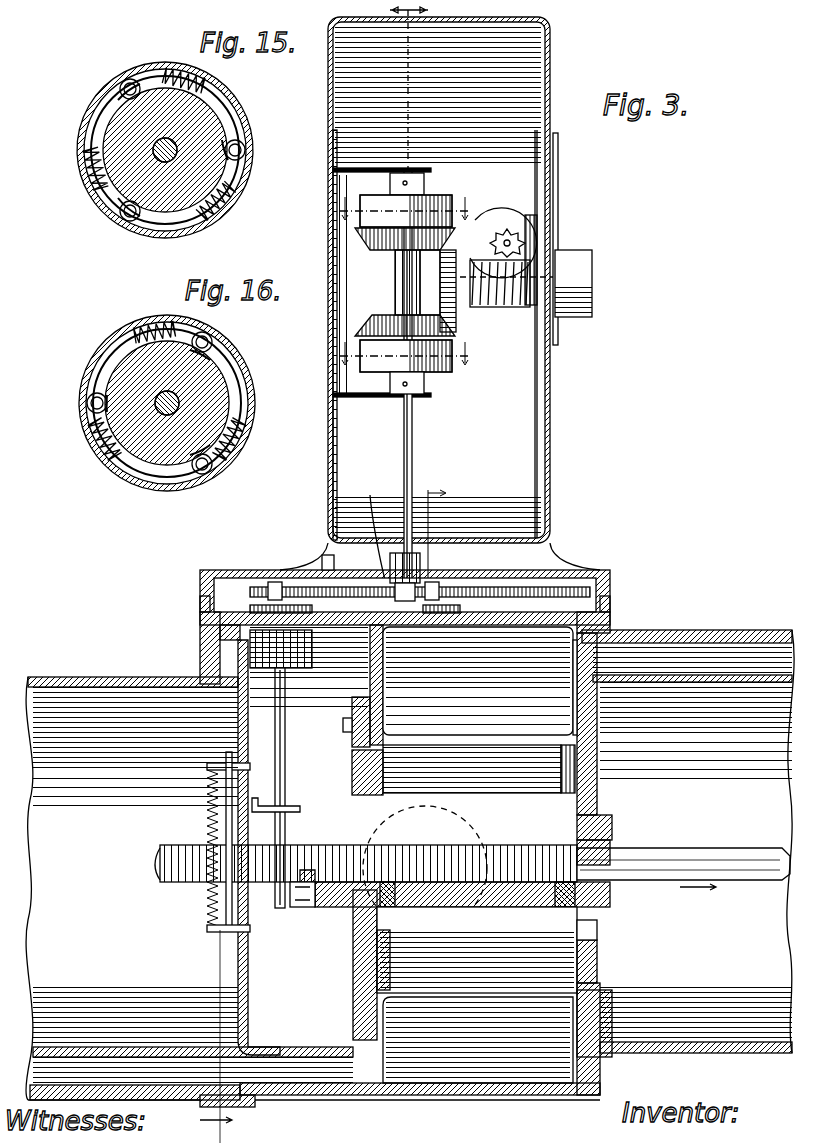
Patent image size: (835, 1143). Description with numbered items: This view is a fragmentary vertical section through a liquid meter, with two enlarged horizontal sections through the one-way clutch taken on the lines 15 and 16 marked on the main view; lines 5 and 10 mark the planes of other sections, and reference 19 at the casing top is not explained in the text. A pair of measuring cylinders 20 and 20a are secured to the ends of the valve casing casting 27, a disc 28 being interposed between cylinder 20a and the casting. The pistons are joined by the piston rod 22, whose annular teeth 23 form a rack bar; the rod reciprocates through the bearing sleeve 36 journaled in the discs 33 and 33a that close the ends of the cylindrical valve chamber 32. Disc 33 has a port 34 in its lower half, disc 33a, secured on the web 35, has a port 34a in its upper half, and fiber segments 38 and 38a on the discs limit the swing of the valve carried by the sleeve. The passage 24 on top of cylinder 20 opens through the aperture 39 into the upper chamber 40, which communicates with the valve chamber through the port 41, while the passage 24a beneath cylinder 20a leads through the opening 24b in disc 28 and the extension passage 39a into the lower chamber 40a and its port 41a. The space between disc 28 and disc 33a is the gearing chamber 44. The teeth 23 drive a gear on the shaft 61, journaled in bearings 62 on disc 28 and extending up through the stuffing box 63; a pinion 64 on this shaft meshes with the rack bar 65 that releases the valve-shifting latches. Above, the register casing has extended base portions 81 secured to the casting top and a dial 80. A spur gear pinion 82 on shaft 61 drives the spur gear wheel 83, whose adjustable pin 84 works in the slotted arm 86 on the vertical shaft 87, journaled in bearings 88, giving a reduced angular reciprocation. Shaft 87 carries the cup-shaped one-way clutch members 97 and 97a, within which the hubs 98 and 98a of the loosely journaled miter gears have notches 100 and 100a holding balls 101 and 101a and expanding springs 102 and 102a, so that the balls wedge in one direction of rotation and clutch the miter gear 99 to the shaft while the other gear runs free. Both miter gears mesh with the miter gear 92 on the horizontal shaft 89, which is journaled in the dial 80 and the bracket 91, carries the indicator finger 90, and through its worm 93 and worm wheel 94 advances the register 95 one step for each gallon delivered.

In FIG. 3, the section line 5 is at (409, 85).
In FIG. 3, the section arrow 10 is at (432, 523).
In FIG. 3, the section line 15 is at (503, 237).
In FIG. 3, the section line 16 is at (403, 361).
In FIG. 3, the housing top 19 is at (488, 20).
In FIG. 3, the measuring cylinder 20 is at (728, 630).
In FIG. 3, the measuring cylinder 20a is at (112, 665).
In FIG. 3, the piston rod 22 is at (684, 845).
In FIG. 3, the annular teeth 23 is at (168, 850).
In FIG. 3, the passage 24 is at (628, 645).
In FIG. 3, the passage 24a is at (35, 1045).
In FIG. 3, the opening 24b is at (245, 1095).
In FIG. 3, the valve casing casting 27 is at (478, 1097).
In FIG. 3, the disc 28 is at (238, 670).
In FIG. 3, the cylindrical valve chamber 32 is at (465, 965).
In FIG. 3, the disc 33 is at (598, 912).
In FIG. 3, the disc 33a is at (343, 725).
In FIG. 3, the port 34 is at (598, 965).
In FIG. 3, the port 34a is at (352, 775).
In FIG. 3, the web 35 is at (372, 680).
In FIG. 3, the bearing sleeve 36 is at (605, 838).
In FIG. 3, the fiber segment 38 is at (562, 788).
In FIG. 3, the fiber segment 38a is at (378, 968).
In FIG. 3, the aperture 39 is at (575, 665).
In FIG. 3, the extension passage 39a is at (340, 1090).
In FIG. 3, the upper chamber 40 is at (478, 681).
In FIG. 3, the lower chamber 40a is at (500, 1045).
In FIG. 3, the port 41 is at (462, 735).
In FIG. 3, the port 41a is at (610, 951).
In FIG. 3, the gearing chamber 44 is at (352, 735).
In FIG. 3, the shaft 61 is at (284, 722).
In FIG. 3, the bearings 62 is at (300, 806).
In FIG. 3, the stuffing box 63 is at (265, 645).
In FIG. 3, the gear pinion 64 is at (305, 905).
In FIG. 3, the rack bar 65 is at (240, 925).
In FIG. 3, the dial 80 is at (548, 398).
In FIG. 3, the extended base portions 81 is at (300, 568).
In FIG. 3, the spur gear pinion 82 is at (255, 592).
In FIG. 3, the spur gear wheel 83 is at (525, 576).
In FIG. 3, the pin 84 is at (326, 560).
In FIG. 3, the arm 86 is at (370, 524).
In FIG. 15, the vertical shaft 87 is at (168, 158).
In FIG. 16, the vertical shaft 87 is at (162, 392).
In FIG. 3, the vertical shaft 87 is at (413, 440).
In FIG. 3, the bearings 88 is at (340, 170).
In FIG. 3, the horizontal shaft 89 is at (594, 268).
In FIG. 3, the indicator finger 90 is at (560, 235).
In FIG. 3, the bracket 91 is at (401, 282).
In FIG. 3, the miter gear 92 is at (457, 318).
In FIG. 3, the worm 93 is at (510, 308).
In FIG. 3, the worm wheel 94 is at (508, 230).
In FIG. 3, the register 95 is at (530, 215).
In FIG. 15, the cup-shaped one-way clutch member 97 is at (245, 132).
In FIG. 3, the cup-shaped one-way clutch member 97 is at (365, 207).
In FIG. 16, the cup-shaped one-way clutch member 97a is at (248, 356).
In FIG. 3, the cup-shaped one-way clutch member 97a is at (455, 352).
In FIG. 15, the hub 98 is at (110, 130).
In FIG. 16, the hub 98a is at (152, 455).
In FIG. 3, the miter gear 99 is at (365, 238).
In FIG. 15, the notches 100 is at (118, 100).
In FIG. 16, the notches 100a is at (213, 352).
In FIG. 15, the balls 101 is at (127, 80).
In FIG. 16, the balls 101a is at (212, 335).
In FIG. 15, the helically coiled expanding springs 102 is at (163, 64).
In FIG. 16, the helically coiled expanding springs 102a is at (180, 318).